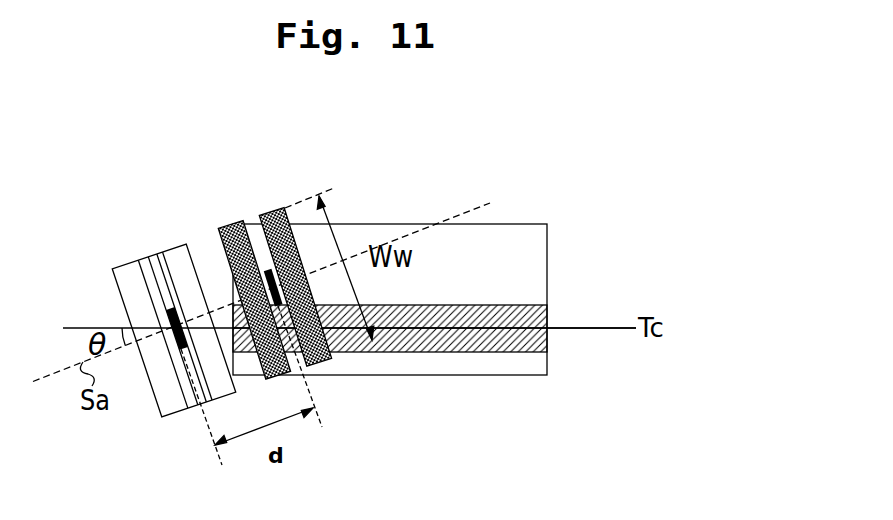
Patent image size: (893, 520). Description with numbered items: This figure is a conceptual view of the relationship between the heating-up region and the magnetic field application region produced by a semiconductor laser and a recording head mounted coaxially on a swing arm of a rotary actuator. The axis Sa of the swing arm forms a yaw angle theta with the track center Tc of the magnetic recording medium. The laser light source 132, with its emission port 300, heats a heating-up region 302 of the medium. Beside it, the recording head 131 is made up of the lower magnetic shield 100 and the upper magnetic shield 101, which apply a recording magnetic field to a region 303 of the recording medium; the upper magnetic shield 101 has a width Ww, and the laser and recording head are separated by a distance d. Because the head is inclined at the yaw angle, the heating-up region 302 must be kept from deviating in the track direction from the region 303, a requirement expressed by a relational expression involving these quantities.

The laser light source 132 is at (134, 229).
The recording head 131 is at (256, 274).
The lower magnetic shield 100 is at (226, 227).
The upper magnetic shield 101 is at (274, 213).
The emission port 300 is at (168, 333).
The heating-up region 302 is at (458, 348).
The magnetic field application region 303 is at (500, 233).